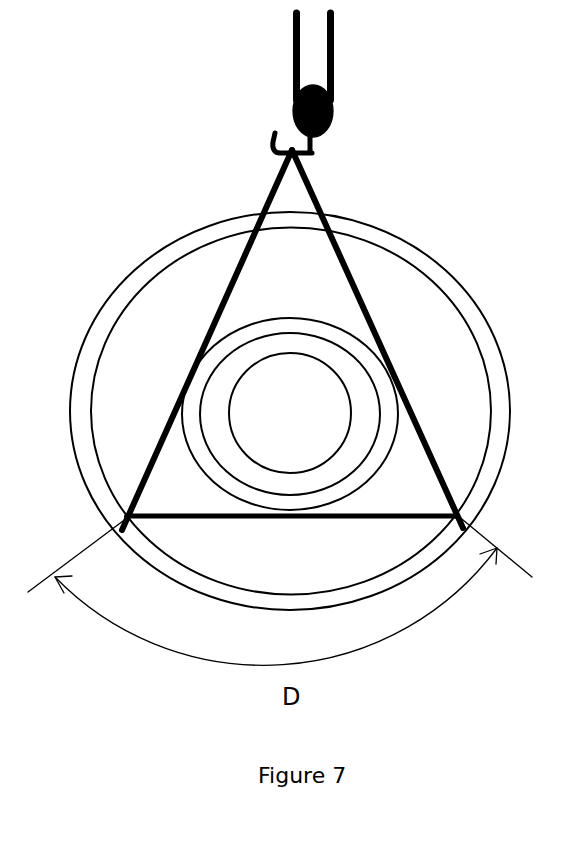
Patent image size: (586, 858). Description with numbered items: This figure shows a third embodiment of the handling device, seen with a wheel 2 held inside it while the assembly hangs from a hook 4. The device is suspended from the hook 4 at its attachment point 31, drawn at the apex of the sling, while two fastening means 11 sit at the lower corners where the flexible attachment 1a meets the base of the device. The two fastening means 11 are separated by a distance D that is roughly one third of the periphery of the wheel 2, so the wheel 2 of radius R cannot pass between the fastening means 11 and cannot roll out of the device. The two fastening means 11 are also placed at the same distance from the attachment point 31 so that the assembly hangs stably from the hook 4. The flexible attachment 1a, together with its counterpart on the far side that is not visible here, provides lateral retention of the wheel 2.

The flexible attachment 1a is at (353, 283).
The wheel 2 is at (153, 360).
The hook 4 is at (333, 114).
The fastening means 11 is at (118, 532).
The attachment point 31 is at (265, 163).